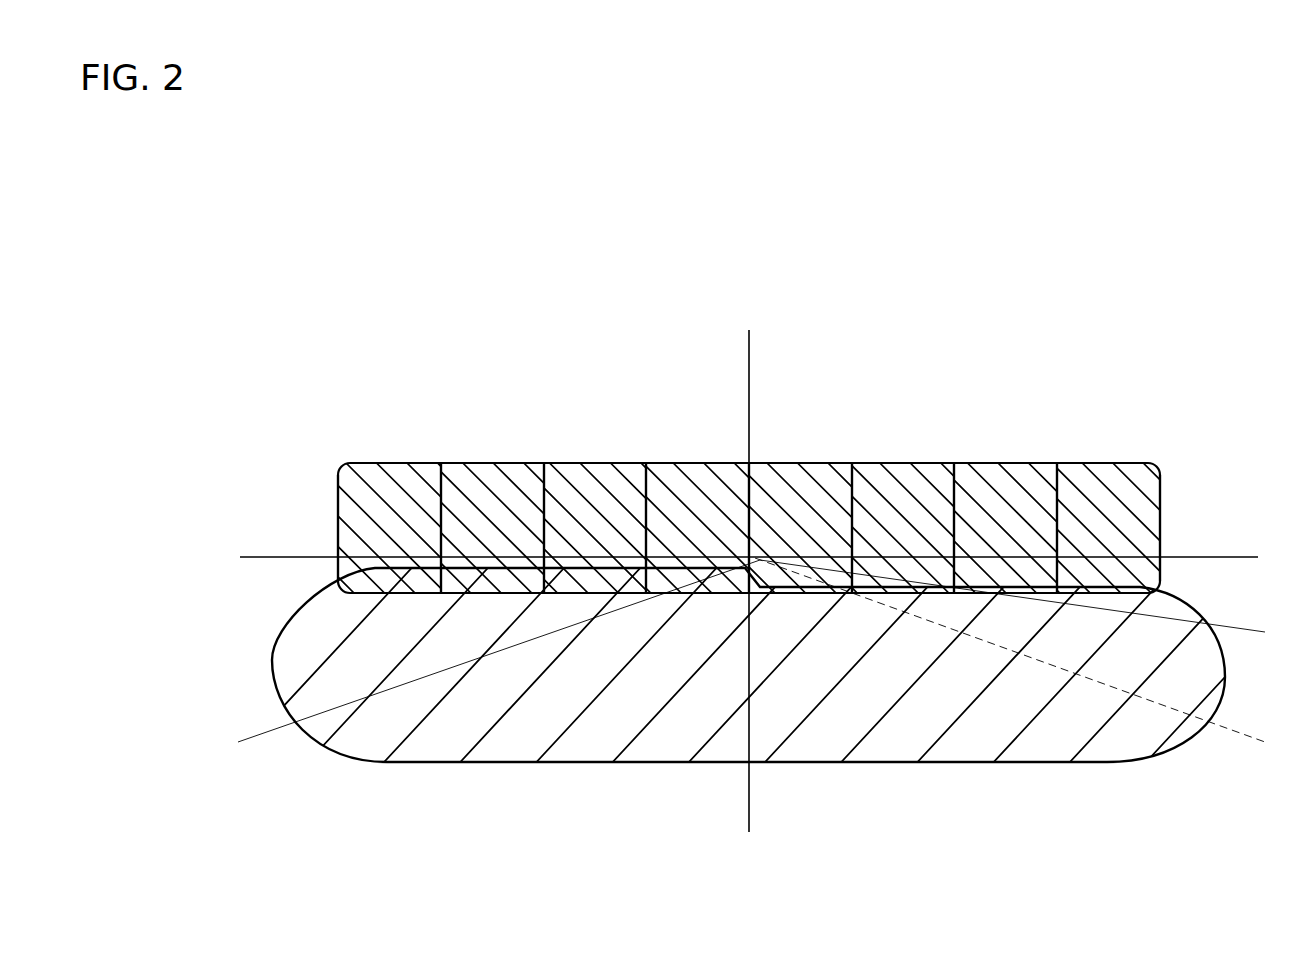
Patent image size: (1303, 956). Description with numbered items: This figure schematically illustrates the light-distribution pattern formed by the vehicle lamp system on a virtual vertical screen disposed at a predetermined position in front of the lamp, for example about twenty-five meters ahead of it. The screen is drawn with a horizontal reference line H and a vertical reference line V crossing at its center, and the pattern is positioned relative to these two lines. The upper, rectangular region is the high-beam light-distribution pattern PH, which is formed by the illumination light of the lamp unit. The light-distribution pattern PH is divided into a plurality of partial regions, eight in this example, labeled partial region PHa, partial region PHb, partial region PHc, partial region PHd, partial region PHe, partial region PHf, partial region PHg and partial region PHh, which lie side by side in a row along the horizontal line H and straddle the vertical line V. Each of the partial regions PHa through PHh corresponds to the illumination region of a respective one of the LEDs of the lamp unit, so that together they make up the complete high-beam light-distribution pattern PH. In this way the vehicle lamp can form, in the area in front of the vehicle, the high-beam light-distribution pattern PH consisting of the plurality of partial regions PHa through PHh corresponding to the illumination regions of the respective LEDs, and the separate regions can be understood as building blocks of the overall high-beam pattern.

The light-distribution pattern PH is at (748, 387).
The partial region PHa is at (388, 485).
The partial region PHb is at (492, 485).
The partial region PHc is at (598, 485).
The partial region PHd is at (698, 485).
The partial region PHe is at (803, 485).
The partial region PHf is at (904, 485).
The partial region PHg is at (1011, 485).
The partial region PHh is at (1108, 423).
The horizontal reference line H is at (751, 558).
The vertical reference line V is at (748, 584).